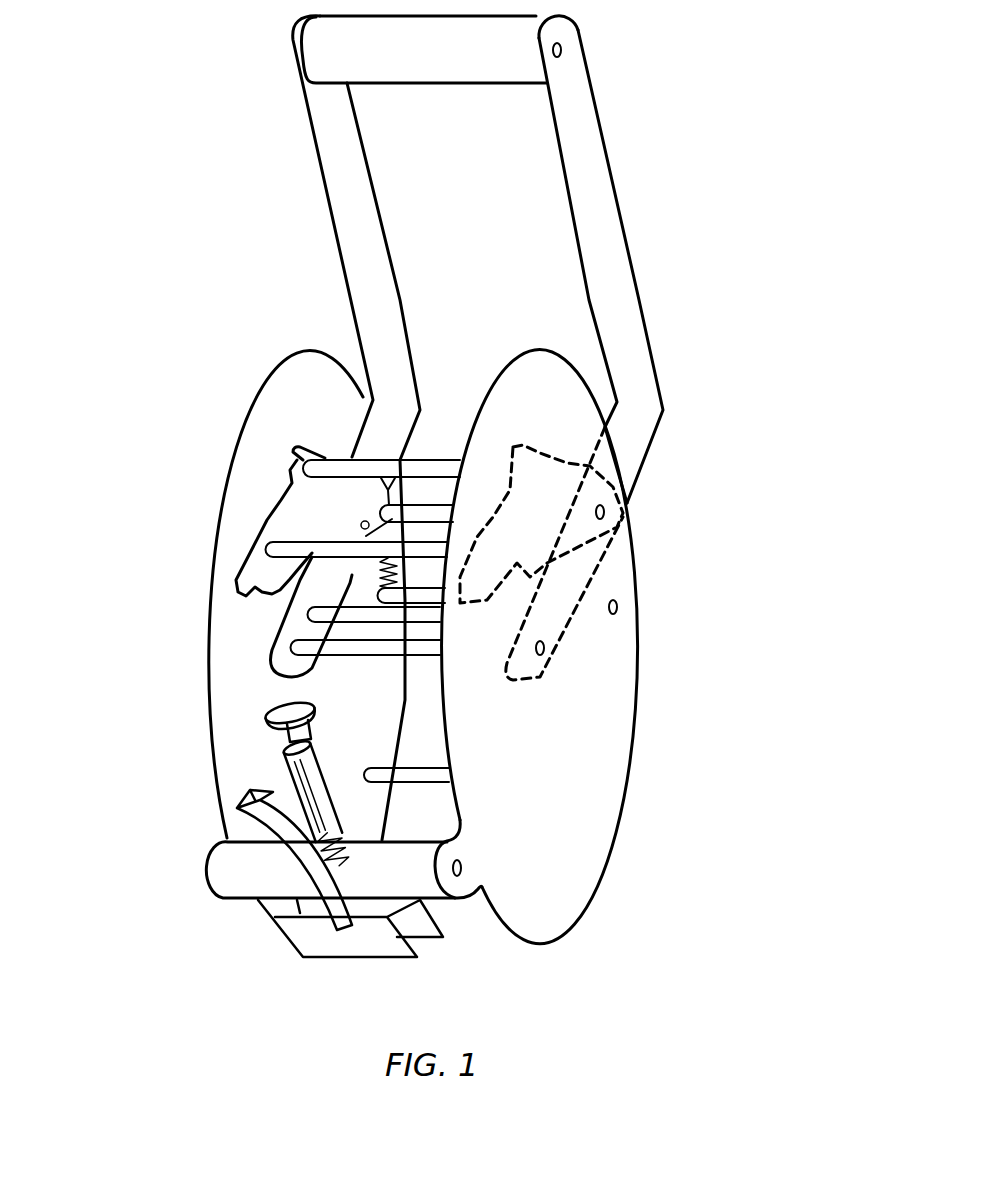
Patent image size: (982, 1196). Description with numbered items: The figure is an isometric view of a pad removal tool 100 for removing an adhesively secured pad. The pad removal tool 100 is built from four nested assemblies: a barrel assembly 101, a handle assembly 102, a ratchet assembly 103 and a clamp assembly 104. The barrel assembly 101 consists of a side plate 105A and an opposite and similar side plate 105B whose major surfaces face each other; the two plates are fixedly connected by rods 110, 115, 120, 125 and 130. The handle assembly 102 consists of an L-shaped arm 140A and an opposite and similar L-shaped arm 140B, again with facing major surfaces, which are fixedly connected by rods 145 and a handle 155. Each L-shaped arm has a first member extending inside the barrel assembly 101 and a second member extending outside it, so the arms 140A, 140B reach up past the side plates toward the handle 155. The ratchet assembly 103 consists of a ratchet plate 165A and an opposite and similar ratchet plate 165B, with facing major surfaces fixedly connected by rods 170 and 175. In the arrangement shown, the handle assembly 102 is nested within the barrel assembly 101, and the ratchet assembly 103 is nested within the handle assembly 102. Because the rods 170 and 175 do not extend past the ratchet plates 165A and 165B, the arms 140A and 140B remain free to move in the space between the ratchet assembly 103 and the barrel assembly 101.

The pad removal tool 100 is at (147, 215).
The barrel assembly 101 is at (643, 647).
The handle assembly 102 is at (677, 259).
The ratchet assembly 103 is at (208, 537).
The clamp assembly 104 is at (287, 767).
The side plate 105A is at (273, 701).
The side plate 105B is at (558, 868).
The rod 110 is at (420, 650).
The rod 115 is at (405, 888).
The rod 120 is at (422, 777).
The rod 125 is at (420, 593).
The rod 130 is at (418, 513).
The L-shaped arm 140A is at (365, 235).
The L-shaped arm 140B is at (573, 142).
The rod 145 is at (352, 618).
The handle 155 is at (470, 60).
The ratchet plate 165A is at (340, 516).
The ratchet plate 165B is at (543, 534).
The rod 170 is at (337, 553).
The rod 175 is at (340, 470).